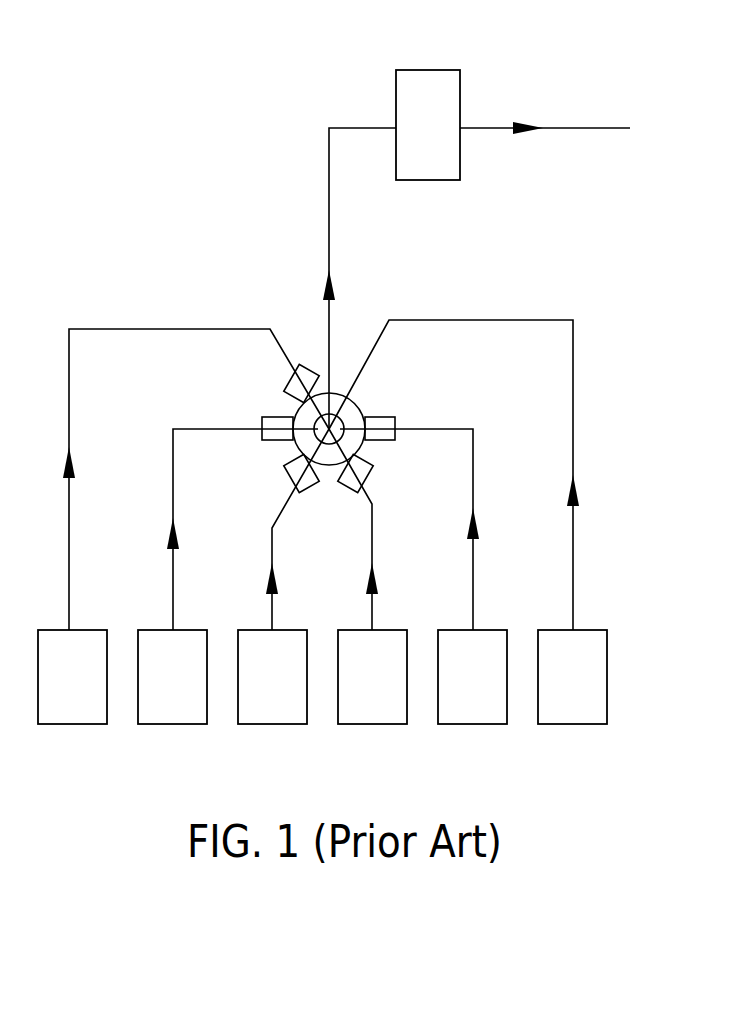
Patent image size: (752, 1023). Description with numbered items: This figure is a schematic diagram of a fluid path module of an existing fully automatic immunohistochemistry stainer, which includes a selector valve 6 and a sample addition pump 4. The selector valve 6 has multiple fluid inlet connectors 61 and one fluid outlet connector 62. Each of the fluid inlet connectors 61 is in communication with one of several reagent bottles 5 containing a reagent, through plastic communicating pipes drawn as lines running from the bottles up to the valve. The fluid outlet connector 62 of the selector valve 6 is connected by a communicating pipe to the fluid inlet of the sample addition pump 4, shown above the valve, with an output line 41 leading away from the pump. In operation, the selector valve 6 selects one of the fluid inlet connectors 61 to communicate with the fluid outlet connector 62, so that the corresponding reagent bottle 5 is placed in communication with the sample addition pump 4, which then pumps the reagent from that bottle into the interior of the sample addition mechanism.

The sample addition pump 4 is at (416, 95).
The output line 41 is at (568, 130).
The reagent bottles 5 is at (77, 702).
The selector valve 6 is at (380, 393).
The fluid inlet connectors 61 is at (298, 383).
The fluid outlet connector 62 is at (303, 447).